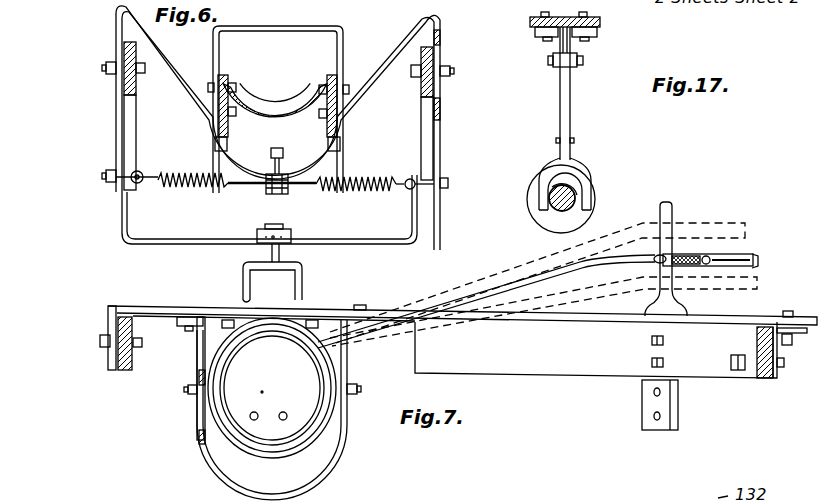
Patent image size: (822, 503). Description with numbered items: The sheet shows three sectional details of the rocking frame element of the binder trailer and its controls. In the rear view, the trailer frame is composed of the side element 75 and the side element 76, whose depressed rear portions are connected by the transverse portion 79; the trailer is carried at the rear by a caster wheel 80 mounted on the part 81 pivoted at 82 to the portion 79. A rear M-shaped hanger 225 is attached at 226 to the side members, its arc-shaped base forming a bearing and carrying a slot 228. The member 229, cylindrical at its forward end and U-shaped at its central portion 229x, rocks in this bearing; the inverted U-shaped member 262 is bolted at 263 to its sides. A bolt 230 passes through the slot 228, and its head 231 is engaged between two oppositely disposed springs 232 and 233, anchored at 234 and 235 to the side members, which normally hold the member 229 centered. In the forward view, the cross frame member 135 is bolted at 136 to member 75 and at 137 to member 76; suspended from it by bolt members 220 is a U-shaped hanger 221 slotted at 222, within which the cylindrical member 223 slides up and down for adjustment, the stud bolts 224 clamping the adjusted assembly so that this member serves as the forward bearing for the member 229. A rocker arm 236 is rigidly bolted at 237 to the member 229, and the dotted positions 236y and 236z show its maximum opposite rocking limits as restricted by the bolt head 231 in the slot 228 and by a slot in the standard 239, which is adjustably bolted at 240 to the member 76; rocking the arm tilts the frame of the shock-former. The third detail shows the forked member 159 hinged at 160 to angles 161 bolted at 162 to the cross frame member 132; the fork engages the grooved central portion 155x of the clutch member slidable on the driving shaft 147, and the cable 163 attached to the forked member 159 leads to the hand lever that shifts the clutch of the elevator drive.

In FIG. 6, the rear M-shaped hanger 225 is at (392, 60).
In FIG. 6, the transverse portion 79 is at (388, 248).
In FIG. 6, the side element 75 is at (138, 88).
In FIG. 7, the side element 75 is at (133, 364).
In FIG. 6, the attachment point of hanger 226 is at (112, 78).
In FIG. 6, the spring anchor 235 is at (112, 186).
In FIG. 6, the side element 76 is at (421, 88).
In FIG. 7, the side element 76 is at (766, 392).
In FIG. 6, the rocking member 229 is at (474, 94).
In FIG. 7, the rocking member 229 is at (315, 422).
In FIG. 6, the inverted U-shaped member 262 is at (318, 30).
In FIG. 6, the bolts 263 is at (233, 83).
In FIG. 6, the U-shaped central portion 229x is at (244, 138).
In FIG. 6, the bolt 230 is at (283, 150).
In FIG. 6, the bolt head 231 is at (283, 196).
In FIG. 6, the slot 228 is at (253, 170).
In FIG. 6, the spring 233 is at (184, 190).
In FIG. 6, the spring 232 is at (358, 178).
In FIG. 6, the spring anchor 234 is at (430, 185).
In FIG. 6, the pivot 82 is at (292, 245).
In FIG. 6, the caster wheel mounting part 81 is at (238, 266).
In FIG. 6, the caster wheel 80 is at (260, 297).
In FIG. 7, the cross frame member 135 is at (122, 306).
In FIG. 7, the bolt 136 is at (105, 348).
In FIG. 7, the bolt members 220 is at (188, 330).
In FIG. 7, the slots 222 is at (197, 415).
In FIG. 7, the stud bolts 224 is at (188, 392).
In FIG. 7, the U-shaped hanger 221 is at (343, 467).
In FIG. 7, the cylindrical member 223 is at (251, 448).
In FIG. 7, the bolt 237 is at (312, 321).
In FIG. 7, the rocker arm 236 is at (680, 243).
In FIG. 7, the dotted position of rocker arm 236y is at (722, 237).
In FIG. 7, the dotted position of rocker arm 236z is at (732, 282).
In FIG. 7, the bolts 240 is at (667, 341).
In FIG. 7, the bolt 137 is at (786, 362).
In FIG. 7, the standard 239 is at (646, 392).
In FIG. 17, the cross frame member 132 is at (600, 25).
In FIG. 17, the bolts 162 is at (540, 12).
In FIG. 17, the angles 161 is at (580, 46).
In FIG. 17, the forked member 159 is at (573, 126).
In FIG. 17, the hinge 160 is at (584, 60).
In FIG. 17, the cable 163 is at (575, 142).
In FIG. 17, the driving shaft 147 is at (550, 213).
In FIG. 17, the grooved central portion 155x is at (578, 219).